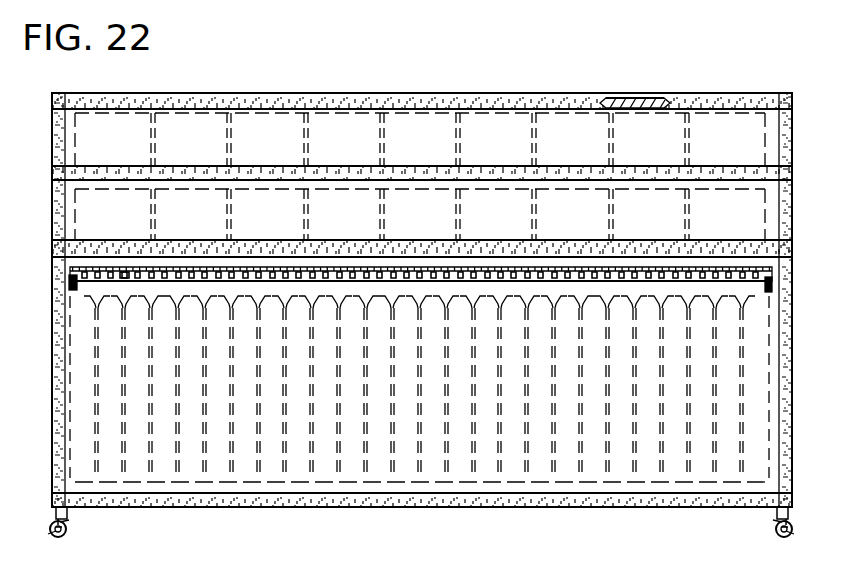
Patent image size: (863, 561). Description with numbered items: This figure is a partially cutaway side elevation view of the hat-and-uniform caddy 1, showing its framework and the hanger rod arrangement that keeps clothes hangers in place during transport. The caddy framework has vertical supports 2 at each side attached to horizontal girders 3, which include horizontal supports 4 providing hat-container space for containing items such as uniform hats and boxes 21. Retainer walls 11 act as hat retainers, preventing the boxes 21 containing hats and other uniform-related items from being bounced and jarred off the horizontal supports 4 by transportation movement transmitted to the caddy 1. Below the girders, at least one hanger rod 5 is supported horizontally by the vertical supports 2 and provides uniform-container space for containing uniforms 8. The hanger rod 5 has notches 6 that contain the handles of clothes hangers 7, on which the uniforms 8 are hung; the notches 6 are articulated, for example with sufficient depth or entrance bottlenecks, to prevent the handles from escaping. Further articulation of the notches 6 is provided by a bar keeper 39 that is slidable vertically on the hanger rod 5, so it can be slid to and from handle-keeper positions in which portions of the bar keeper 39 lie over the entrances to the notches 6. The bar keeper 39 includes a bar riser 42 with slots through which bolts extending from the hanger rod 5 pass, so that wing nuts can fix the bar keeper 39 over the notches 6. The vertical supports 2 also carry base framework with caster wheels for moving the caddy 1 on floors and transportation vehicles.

The hat-and-uniform caddy 1 is at (748, 68).
The vertical supports 2 is at (61, 207).
The horizontal girders 3 is at (280, 248).
The horizontal supports 4 is at (633, 98).
The hanger rod 5 is at (103, 279).
The notches 6 is at (124, 279).
The clothes hangers 7 is at (137, 283).
The uniforms 8 is at (123, 413).
The retainer walls 11 is at (652, 98).
The boxes 21 is at (457, 188).
The bar keeper 39 is at (115, 267).
The bar riser 42 is at (68, 293).